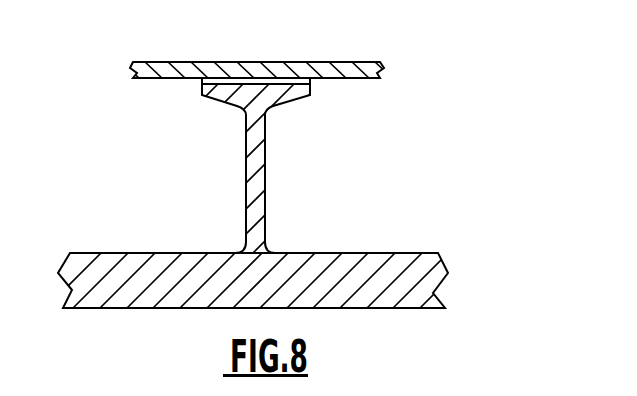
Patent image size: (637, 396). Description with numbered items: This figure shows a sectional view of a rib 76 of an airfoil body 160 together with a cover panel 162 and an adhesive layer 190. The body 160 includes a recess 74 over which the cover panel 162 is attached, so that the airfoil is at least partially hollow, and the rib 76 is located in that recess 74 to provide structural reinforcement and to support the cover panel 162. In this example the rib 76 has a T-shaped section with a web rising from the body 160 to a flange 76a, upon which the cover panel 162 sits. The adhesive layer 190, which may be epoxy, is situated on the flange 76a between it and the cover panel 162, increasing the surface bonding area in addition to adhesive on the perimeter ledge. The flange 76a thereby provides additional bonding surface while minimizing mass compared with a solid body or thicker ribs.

The recess 74 is at (122, 218).
The rib 76 is at (253, 198).
The flange 76a is at (206, 100).
The body 160 is at (105, 283).
The cover panel 162 is at (342, 63).
The adhesive layer 190 is at (310, 83).